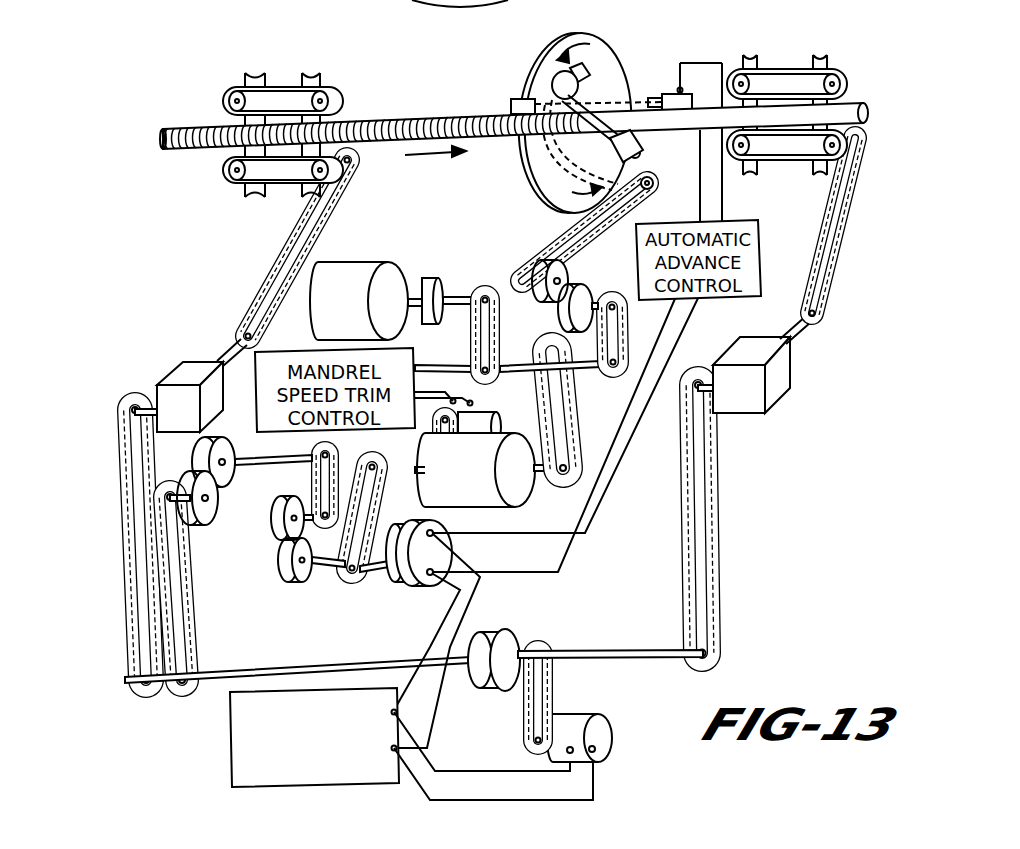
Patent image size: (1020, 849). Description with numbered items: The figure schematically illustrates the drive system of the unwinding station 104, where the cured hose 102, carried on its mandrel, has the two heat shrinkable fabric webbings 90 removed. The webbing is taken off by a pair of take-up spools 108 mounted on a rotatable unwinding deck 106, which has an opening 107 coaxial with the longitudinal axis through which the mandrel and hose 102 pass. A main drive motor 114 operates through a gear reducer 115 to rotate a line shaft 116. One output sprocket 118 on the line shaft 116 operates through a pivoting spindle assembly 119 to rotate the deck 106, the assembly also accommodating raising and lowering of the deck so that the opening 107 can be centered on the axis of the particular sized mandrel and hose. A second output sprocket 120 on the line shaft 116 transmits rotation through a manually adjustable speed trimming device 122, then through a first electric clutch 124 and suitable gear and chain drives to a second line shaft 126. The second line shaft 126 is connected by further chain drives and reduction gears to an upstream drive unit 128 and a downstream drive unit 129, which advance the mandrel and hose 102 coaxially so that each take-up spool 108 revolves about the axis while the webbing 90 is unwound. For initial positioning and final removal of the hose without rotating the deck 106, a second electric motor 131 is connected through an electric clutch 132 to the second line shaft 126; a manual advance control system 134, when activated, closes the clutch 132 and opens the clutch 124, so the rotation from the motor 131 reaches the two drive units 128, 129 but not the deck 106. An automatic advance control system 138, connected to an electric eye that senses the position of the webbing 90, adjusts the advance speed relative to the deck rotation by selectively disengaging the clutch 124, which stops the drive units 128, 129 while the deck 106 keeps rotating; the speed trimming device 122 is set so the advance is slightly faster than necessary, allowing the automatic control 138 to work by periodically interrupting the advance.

The fabric webbing 90 is at (350, 126).
The hose 102 is at (700, 166).
The unwinding station 104 is at (575, 109).
The unwinding deck 106 is at (603, 40).
The opening 107 is at (590, 168).
The take-up spool 108 is at (580, 82).
The main drive motor 114 is at (353, 314).
The gear reducer 115 is at (433, 278).
The line shaft 116 is at (498, 365).
The output sprocket 118 is at (623, 362).
The pivoting spindle assembly 119 is at (548, 217).
The second output sprocket 120 is at (558, 410).
The speed trimming device 122 is at (510, 496).
The first electric clutch 124 is at (410, 590).
The second line shaft 126 is at (330, 667).
The upstream drive unit 128 is at (291, 72).
The downstream drive unit 129 is at (792, 22).
The second electric motor 131 is at (575, 713).
The electric clutch 132 is at (495, 630).
The manual advance control system 134 is at (230, 745).
The automatic advance control system 138 is at (740, 222).